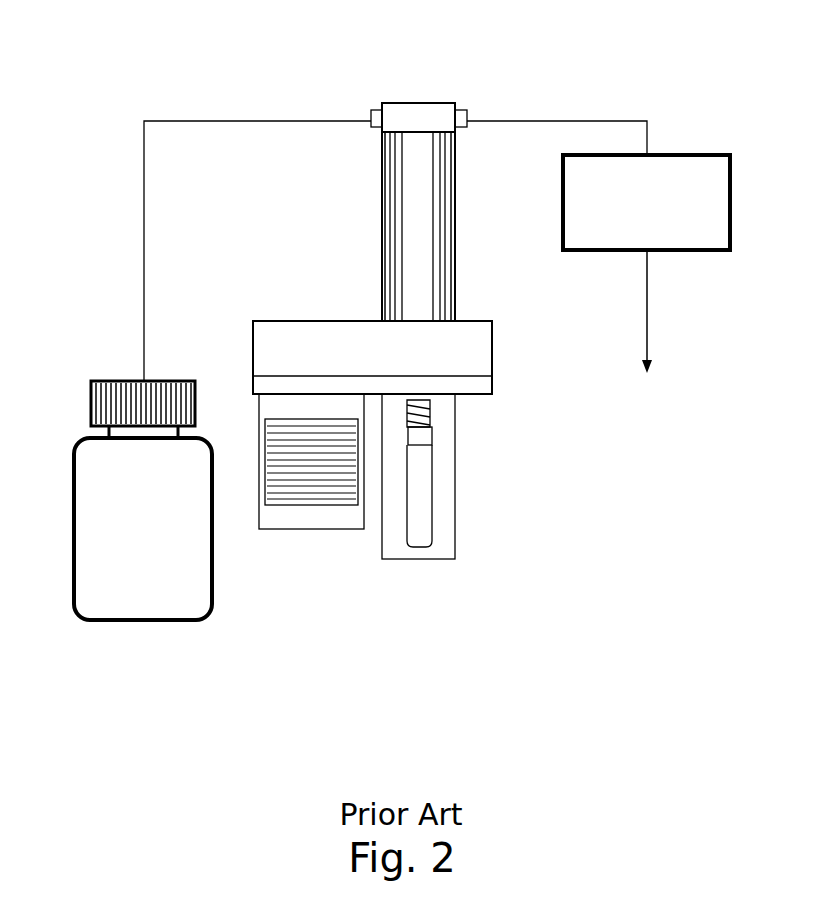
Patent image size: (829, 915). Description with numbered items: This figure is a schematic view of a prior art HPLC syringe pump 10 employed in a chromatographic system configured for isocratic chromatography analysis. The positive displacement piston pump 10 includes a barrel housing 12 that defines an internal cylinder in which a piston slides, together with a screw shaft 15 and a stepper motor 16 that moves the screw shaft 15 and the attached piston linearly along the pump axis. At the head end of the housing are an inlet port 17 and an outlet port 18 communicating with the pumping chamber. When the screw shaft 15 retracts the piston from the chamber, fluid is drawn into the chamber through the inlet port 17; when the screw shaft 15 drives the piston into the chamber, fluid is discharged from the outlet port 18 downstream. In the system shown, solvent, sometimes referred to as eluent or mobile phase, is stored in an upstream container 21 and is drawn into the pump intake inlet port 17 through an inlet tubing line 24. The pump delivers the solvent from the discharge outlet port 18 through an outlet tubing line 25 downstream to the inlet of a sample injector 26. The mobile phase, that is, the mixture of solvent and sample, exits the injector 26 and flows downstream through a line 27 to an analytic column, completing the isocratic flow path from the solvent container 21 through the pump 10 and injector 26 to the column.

The syringe pump 10 is at (341, 211).
The barrel housing 12 is at (427, 230).
The screw shaft 15 is at (432, 414).
The stepper motor 16 is at (303, 516).
The inlet port 17 is at (378, 113).
The outlet port 18 is at (459, 113).
The upstream container 21 is at (150, 583).
The inlet tubing line 24 is at (219, 119).
The outlet tubing line 25 is at (583, 113).
The sample injector 26 is at (675, 175).
The line 27 is at (649, 326).